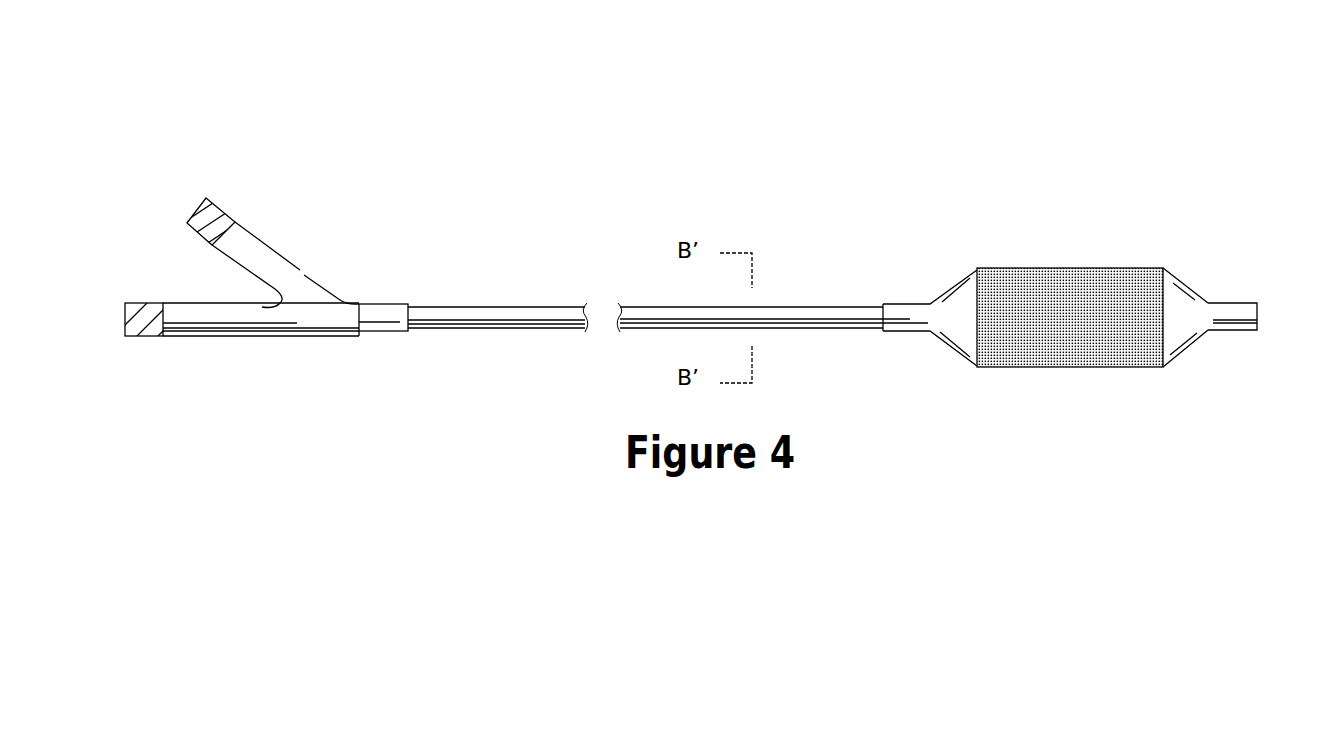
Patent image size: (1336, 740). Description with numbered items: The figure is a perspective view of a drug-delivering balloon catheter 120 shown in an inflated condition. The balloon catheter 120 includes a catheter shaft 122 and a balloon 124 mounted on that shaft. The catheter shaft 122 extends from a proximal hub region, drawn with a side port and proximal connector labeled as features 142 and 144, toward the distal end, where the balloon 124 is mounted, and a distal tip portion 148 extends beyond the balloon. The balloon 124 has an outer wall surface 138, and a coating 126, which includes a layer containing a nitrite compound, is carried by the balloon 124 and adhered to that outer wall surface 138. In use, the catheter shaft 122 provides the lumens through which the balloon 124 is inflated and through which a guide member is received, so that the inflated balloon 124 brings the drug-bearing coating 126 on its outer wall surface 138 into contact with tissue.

The drug-delivering balloon catheter 120 is at (563, 113).
The catheter shaft 122 is at (797, 329).
The balloon 124 is at (952, 280).
The coating 126 is at (1011, 368).
The outer wall surface 138 is at (1196, 318).
The side port 142 is at (192, 207).
The proximal hub 144 is at (125, 331).
The distal tip 148 is at (1265, 315).